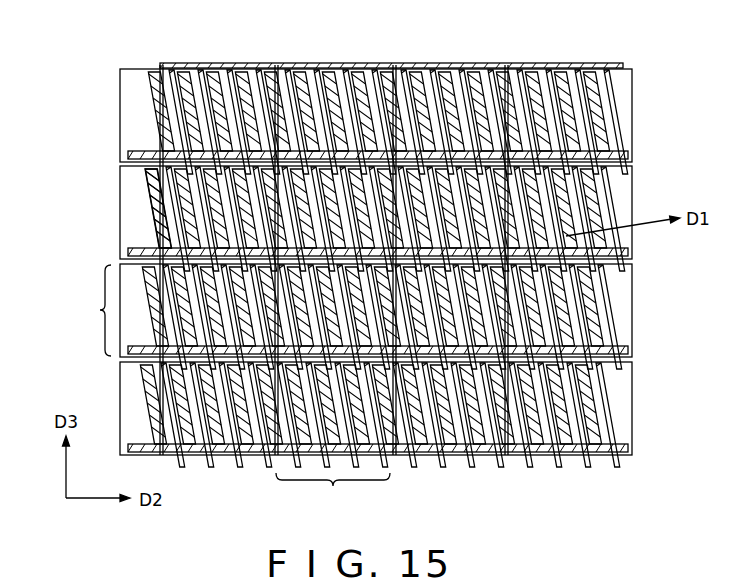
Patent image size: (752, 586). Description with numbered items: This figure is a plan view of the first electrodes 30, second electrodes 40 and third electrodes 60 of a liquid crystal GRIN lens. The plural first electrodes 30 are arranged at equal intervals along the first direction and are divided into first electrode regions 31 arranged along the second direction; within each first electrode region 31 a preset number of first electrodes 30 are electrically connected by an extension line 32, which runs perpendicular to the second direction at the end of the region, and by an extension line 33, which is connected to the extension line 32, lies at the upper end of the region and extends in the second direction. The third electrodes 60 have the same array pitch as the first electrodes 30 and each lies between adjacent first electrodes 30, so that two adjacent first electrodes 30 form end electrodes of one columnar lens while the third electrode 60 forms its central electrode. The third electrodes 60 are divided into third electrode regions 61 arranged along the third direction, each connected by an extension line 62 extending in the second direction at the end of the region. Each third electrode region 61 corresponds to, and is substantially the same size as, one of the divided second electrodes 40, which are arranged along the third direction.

The first electrode 30 is at (602, 420).
The first electrode region 31 is at (333, 492).
The extension line 32 is at (494, 457).
The extension line 33 is at (552, 56).
The second electrode 40 is at (112, 108).
The third electrode 60 is at (148, 172).
The third electrode region 61 is at (92, 310).
The extension line 62 is at (119, 244).